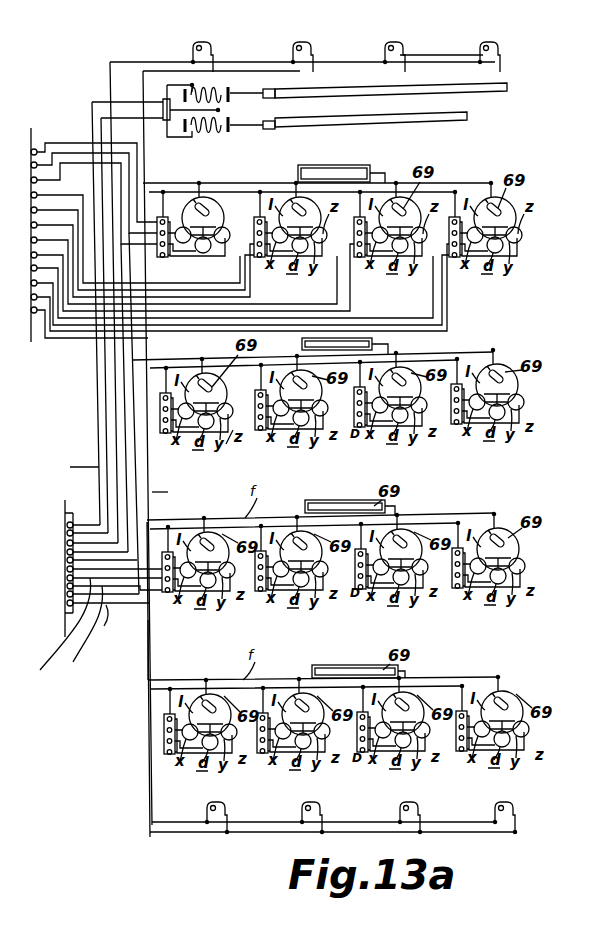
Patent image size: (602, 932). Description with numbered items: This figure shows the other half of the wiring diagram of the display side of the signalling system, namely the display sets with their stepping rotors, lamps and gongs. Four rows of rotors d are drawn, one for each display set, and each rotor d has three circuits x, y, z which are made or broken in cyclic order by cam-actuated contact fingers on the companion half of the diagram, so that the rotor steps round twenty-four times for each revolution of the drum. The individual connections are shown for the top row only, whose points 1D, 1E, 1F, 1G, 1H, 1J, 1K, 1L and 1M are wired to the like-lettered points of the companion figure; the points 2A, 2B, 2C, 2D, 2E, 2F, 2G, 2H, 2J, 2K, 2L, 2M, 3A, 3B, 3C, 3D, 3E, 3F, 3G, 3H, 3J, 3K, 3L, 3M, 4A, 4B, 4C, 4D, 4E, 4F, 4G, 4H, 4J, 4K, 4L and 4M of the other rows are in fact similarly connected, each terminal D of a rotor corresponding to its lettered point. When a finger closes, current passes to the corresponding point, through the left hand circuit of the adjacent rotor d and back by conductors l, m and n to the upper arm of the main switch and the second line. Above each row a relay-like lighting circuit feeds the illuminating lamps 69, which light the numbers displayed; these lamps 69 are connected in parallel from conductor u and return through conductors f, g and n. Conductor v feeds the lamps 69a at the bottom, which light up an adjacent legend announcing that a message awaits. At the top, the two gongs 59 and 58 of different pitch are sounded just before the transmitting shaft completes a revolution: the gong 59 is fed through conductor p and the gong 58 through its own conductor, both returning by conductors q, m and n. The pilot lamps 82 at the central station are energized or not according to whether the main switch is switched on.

The pilot lamps 82 is at (507, 34).
The gong 59 is at (404, 89).
The gong 58 is at (384, 119).
The conductor q is at (170, 134).
The illuminating lamps 69 is at (207, 209).
The legend lamps 69a is at (522, 815).
The conductor f is at (255, 192).
The conductor l is at (186, 216).
The rotor circuit z is at (226, 234).
The rotor circuit x is at (179, 242).
The rotor d is at (201, 252).
The rotor circuit y is at (217, 242).
The connection point D is at (330, 264).
The connection point 1D is at (241, 225).
The connection point 1E is at (241, 235).
The connection point 1F is at (241, 245).
The connection point 1G is at (338, 225).
The connection point 1H is at (338, 235).
The connection point 1J is at (336, 245).
The connection point 1K is at (438, 225).
The connection point 1L is at (438, 235).
The connection point 1M is at (439, 245).
The connection point 2A is at (145, 401).
The connection point 2B is at (145, 411).
The connection point 2C is at (145, 421).
The connection point 2D is at (245, 401).
The connection point 2E is at (245, 411).
The connection point 2F is at (245, 421).
The connection point 2G is at (340, 398).
The connection point 2H is at (340, 408).
The connection point 2J is at (338, 418).
The connection point 2K is at (439, 395).
The connection point 2L is at (439, 405).
The connection point 2M is at (440, 415).
The connection point 3A is at (151, 560).
The connection point 3B is at (151, 570).
The connection point 3C is at (151, 580).
The connection point 3D is at (250, 560).
The connection point 3E is at (250, 570).
The connection point 3F is at (250, 580).
The connection point 3G is at (343, 559).
The connection point 3H is at (343, 569).
The connection point 3J is at (341, 579).
The connection point 3K is at (443, 557).
The connection point 3L is at (443, 567).
The connection point 3M is at (444, 577).
The connection point 4A is at (153, 722).
The connection point 4B is at (153, 732).
The connection point 4C is at (153, 742).
The connection point 4D is at (252, 730).
The connection point 4E is at (252, 740).
The connection point 4F is at (252, 750).
The connection point 4G is at (345, 721).
The connection point 4H is at (345, 731).
The connection point 4J is at (343, 741).
The connection point 4K is at (445, 720).
The connection point 4L is at (445, 730).
The connection point 4M is at (446, 740).
The conductor v is at (79, 568).
The conductor u is at (59, 631).
The conductor n is at (104, 625).
The conductor p is at (89, 522).
The conductor m is at (171, 492).
The conductor g is at (161, 650).